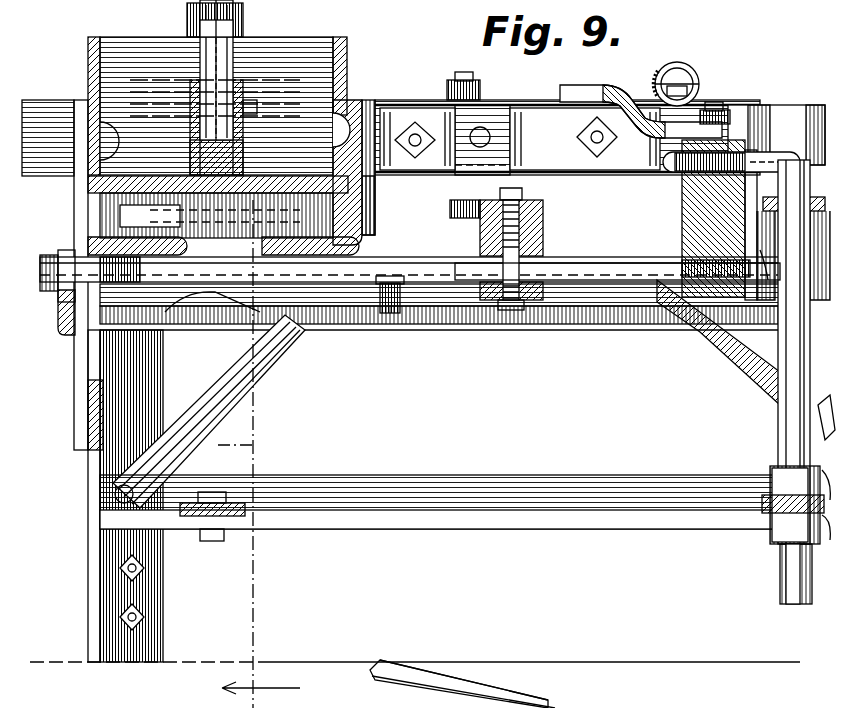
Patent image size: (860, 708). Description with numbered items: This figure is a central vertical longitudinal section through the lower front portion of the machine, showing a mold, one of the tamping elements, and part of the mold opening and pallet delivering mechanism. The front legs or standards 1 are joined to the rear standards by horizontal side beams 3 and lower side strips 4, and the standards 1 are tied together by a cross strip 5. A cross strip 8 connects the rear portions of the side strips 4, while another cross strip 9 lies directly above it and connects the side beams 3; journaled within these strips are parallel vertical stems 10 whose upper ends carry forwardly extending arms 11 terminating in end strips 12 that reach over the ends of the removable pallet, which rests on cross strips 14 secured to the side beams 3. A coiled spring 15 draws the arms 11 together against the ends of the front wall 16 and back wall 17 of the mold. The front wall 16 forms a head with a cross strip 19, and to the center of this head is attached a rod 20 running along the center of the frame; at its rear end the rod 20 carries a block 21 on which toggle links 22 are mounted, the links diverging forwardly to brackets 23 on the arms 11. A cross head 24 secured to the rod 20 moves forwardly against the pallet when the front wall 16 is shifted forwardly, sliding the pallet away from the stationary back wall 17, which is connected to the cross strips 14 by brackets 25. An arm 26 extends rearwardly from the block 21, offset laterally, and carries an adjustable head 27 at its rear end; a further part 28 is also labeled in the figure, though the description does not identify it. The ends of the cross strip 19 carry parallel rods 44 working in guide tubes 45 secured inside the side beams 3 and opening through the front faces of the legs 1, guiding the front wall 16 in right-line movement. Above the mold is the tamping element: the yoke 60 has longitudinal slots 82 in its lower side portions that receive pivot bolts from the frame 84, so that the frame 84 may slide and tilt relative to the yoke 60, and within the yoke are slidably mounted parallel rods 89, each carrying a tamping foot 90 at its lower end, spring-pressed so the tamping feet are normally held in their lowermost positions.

The front legs or standards 1 is at (118, 570).
The horizontal side beams 3 is at (545, 328).
The lower side strips 4 is at (545, 512).
The cross strip 5 is at (100, 462).
The cross strip 8 is at (762, 512).
The cross strip 9 is at (765, 200).
The vertical stems 10 is at (228, 32).
The arms 11 is at (726, 103).
The end strips 12 is at (405, 100).
The cross strips 14 is at (88, 244).
The coiled spring 15 is at (688, 68).
The front wall 16 is at (88, 105).
The back wall 17 is at (506, 684).
The cross strip 19 is at (66, 335).
The rod 20 is at (450, 283).
The block 21 is at (695, 194).
The toggle links 22 is at (580, 84).
The brackets 23 is at (80, 215).
The cross head 24 is at (540, 235).
The brackets 25 is at (375, 198).
The arm 26 is at (770, 158).
The adjustable head 27 is at (340, 100).
The base slab 28 is at (74, 190).
The parallel rods 44 is at (200, 305).
The guide tubes 45 is at (362, 300).
The yoke 60 is at (187, 14).
The longitudinal slots 82 is at (187, 20).
The frame 84 is at (348, 50).
The parallel rods 89 is at (232, 52).
The tamping foot 90 is at (250, 130).